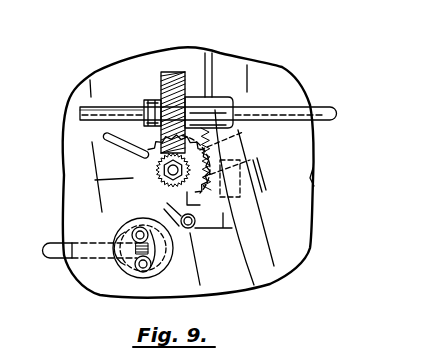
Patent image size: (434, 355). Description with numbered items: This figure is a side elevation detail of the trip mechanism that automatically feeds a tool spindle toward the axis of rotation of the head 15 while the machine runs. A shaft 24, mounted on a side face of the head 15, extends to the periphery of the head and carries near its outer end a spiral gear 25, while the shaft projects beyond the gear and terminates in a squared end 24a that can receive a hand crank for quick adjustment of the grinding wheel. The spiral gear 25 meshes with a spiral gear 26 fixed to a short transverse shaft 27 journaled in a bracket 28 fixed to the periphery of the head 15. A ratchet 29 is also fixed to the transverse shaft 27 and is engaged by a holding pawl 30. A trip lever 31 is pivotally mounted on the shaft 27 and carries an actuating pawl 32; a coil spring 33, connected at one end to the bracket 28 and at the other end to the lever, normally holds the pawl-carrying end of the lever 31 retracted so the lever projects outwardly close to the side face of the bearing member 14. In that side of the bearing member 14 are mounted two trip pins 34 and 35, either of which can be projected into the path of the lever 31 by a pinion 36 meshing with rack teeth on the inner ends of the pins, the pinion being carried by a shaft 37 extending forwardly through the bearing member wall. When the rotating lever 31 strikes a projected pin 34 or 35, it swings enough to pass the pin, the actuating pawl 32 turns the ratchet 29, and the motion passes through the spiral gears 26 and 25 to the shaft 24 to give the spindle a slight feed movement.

The bearing member 14 is at (70, 200).
The head 15 is at (314, 177).
The shaft 24 is at (320, 107).
The squared end 24a is at (110, 108).
The spiral gear 25 is at (177, 72).
The spiral gear 26 is at (147, 190).
The transverse shaft 27 is at (101, 183).
The bracket 28 is at (210, 223).
The ratchet 29 is at (137, 160).
The holding pawl 30 is at (197, 208).
The trip lever 31 is at (110, 137).
The actuating pawl 32 is at (250, 160).
The coil spring 33 is at (243, 132).
The trip pin 34 is at (130, 233).
The trip pin 35 is at (128, 268).
The pinion 36 is at (178, 262).
The shaft 37 is at (63, 257).